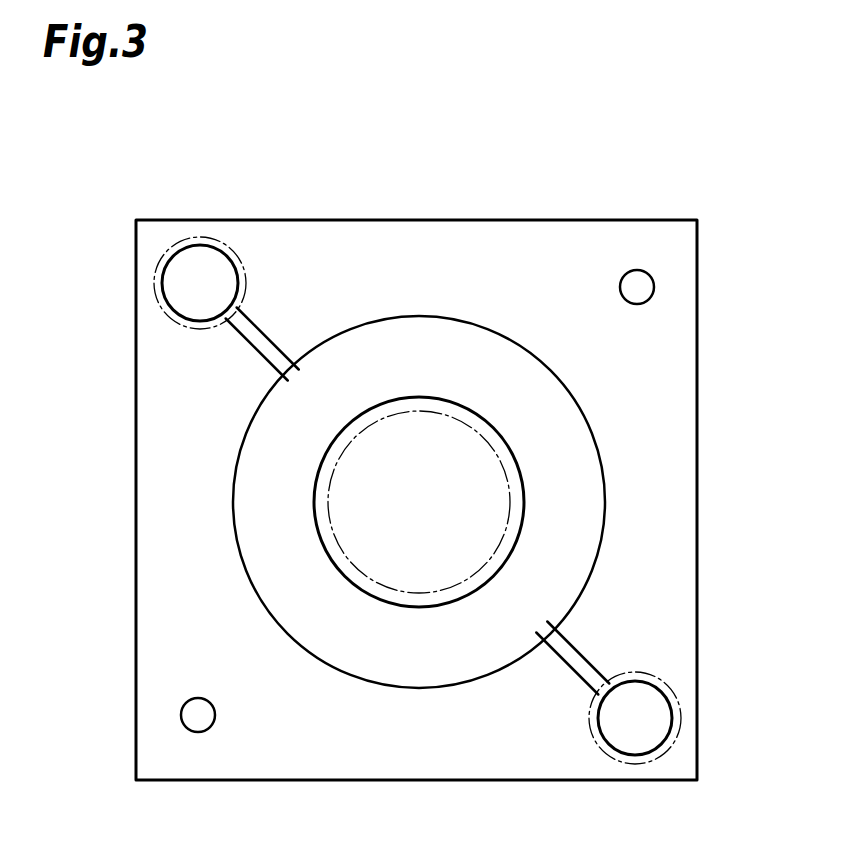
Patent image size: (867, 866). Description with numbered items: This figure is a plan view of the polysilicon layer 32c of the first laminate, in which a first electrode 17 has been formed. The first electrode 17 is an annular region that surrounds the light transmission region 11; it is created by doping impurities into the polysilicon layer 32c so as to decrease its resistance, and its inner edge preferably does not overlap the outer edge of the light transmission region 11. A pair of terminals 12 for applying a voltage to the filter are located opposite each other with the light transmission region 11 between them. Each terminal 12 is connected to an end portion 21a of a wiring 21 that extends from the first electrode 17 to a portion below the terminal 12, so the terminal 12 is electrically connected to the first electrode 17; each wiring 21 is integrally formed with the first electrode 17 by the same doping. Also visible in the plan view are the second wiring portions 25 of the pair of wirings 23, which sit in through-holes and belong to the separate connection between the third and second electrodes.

The light transmission region 11 is at (393, 592).
The terminal 12 is at (217, 243).
The first electrode 17 is at (435, 325).
The wiring 21 is at (237, 338).
The end portion 21a is at (175, 272).
The wiring 23 is at (419, 498).
The second wiring portion 25 is at (637, 285).
The polysilicon layer 32c is at (407, 780).